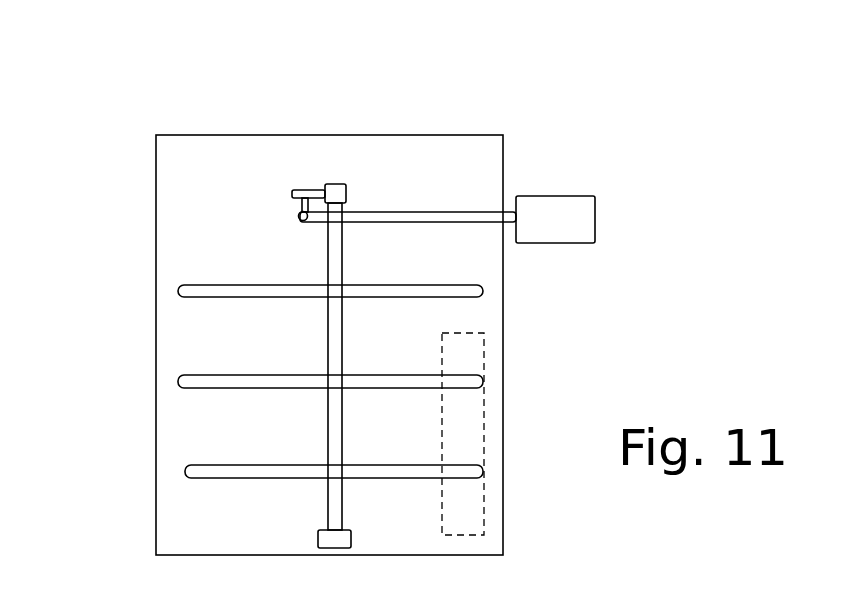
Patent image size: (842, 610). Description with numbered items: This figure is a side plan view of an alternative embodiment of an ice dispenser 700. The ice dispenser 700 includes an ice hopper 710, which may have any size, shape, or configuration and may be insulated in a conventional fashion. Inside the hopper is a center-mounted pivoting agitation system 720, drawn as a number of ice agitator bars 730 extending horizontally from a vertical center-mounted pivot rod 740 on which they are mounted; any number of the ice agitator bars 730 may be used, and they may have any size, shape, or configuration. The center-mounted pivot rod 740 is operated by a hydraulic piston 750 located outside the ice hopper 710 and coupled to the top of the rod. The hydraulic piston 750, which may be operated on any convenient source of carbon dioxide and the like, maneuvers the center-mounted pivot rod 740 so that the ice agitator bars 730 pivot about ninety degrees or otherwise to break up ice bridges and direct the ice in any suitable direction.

The ice dispenser 700 is at (124, 92).
The ice hopper 710 is at (503, 163).
The center-mounted pivoting agitation system 720 is at (330, 348).
The ice agitator bars 730 is at (415, 285).
The center-mounted pivot rod 740 is at (343, 270).
The hydraulic piston 750 is at (578, 196).